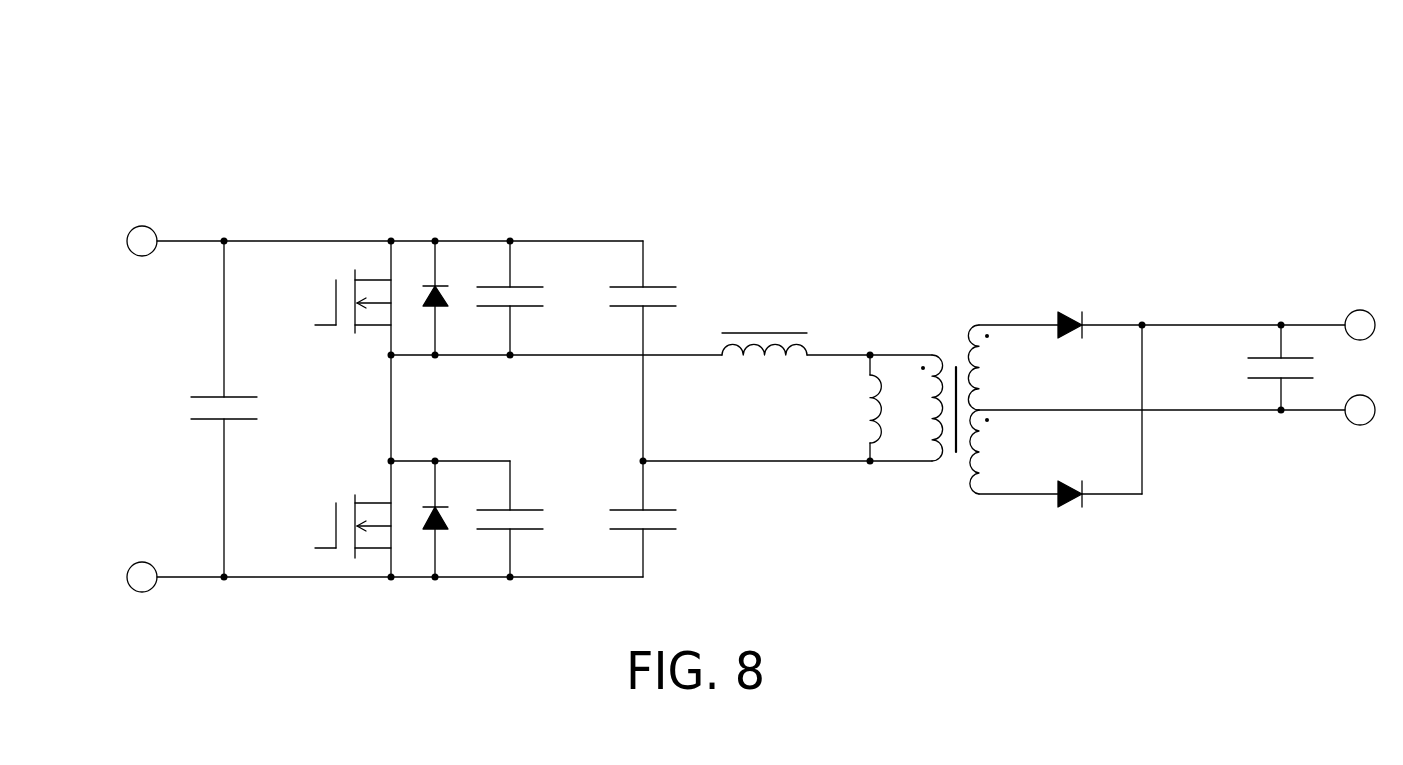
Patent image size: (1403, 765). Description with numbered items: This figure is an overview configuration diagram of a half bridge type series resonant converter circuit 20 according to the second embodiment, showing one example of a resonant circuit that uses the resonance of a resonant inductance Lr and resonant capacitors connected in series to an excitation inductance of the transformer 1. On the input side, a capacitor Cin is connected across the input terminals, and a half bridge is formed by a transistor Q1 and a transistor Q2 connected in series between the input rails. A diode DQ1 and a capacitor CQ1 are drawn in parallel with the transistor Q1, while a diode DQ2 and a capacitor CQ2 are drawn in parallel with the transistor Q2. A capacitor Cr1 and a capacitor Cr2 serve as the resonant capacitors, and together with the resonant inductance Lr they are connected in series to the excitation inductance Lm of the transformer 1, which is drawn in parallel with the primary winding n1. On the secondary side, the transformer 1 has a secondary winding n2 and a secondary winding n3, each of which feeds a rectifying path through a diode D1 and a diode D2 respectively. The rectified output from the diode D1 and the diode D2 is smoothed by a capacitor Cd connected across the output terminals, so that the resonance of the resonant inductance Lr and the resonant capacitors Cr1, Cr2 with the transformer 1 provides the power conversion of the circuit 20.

The series resonant converter circuit 20 is at (182, 83).
The transformer 1 is at (956, 305).
The capacitor Cin is at (210, 409).
The transistor Q1 is at (333, 295).
The transistor Q2 is at (333, 519).
The diode DQ1 is at (439, 272).
The diode DQ2 is at (439, 493).
The capacitor CQ1 is at (510, 272).
The capacitor CQ2 is at (530, 519).
The capacitor Cr1 is at (646, 325).
The capacitor Cr2 is at (674, 519).
The resonant inductance Lr is at (764, 322).
The magnetizing inductance Lm is at (849, 408).
The primary winding n1 is at (922, 434).
The secondary winding n2 is at (996, 367).
The secondary winding n3 is at (997, 452).
The diode D1 is at (1075, 304).
The diode D2 is at (1075, 476).
The capacitor Cd is at (1255, 367).